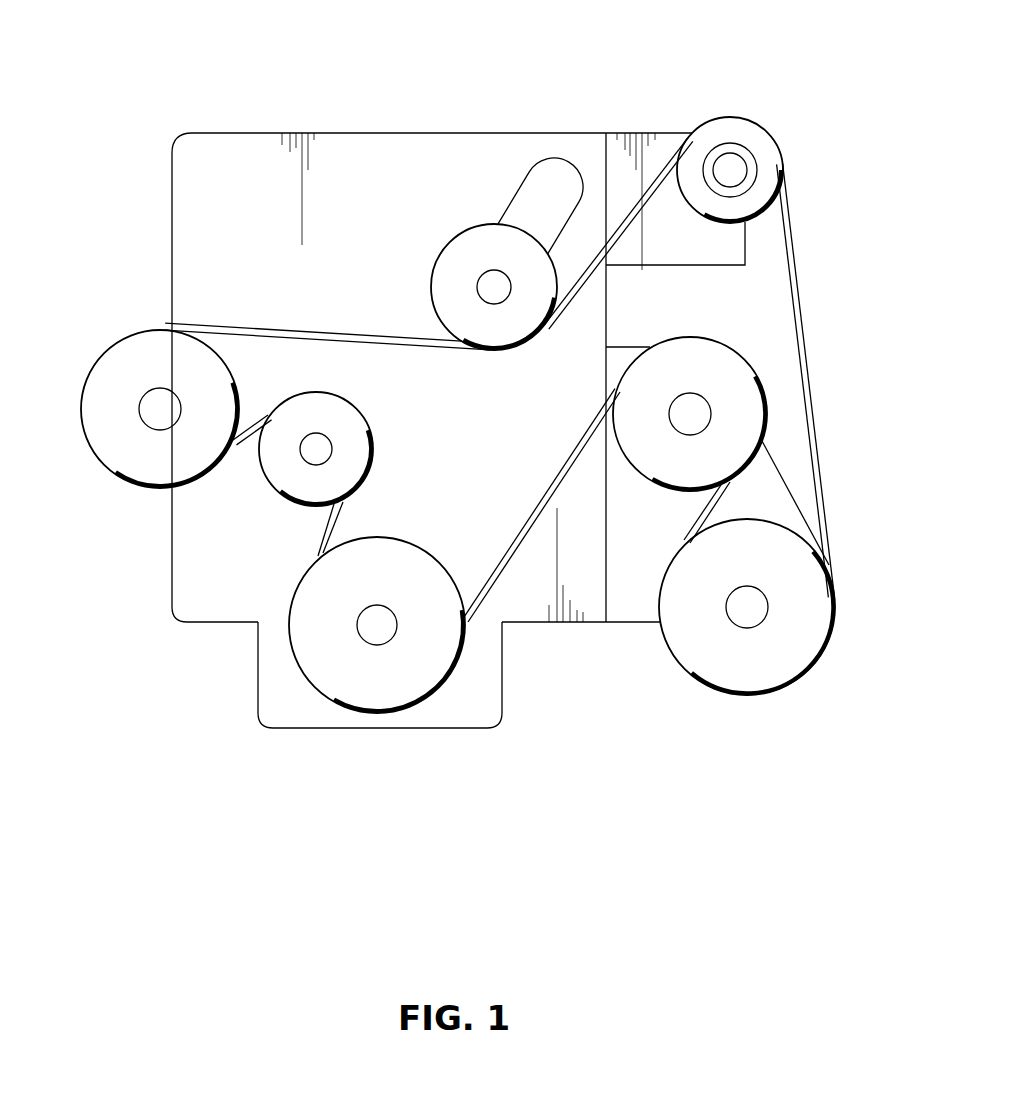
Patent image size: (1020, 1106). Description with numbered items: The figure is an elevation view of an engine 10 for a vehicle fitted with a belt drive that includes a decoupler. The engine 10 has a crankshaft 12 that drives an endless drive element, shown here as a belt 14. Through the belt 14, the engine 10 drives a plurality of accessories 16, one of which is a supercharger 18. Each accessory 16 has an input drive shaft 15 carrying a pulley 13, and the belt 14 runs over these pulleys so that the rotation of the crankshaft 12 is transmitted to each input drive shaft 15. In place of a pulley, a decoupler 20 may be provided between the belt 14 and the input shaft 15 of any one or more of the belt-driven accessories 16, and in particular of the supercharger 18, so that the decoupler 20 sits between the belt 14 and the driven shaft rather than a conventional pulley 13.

The engine 10 is at (134, 125).
The crankshaft 12 is at (376, 630).
The pulley 13 is at (128, 465).
The belt 14 is at (506, 580).
The input drive shaft 15 is at (160, 416).
The accessories 16 is at (142, 365).
The supercharger 18 is at (725, 82).
The decoupler 20 is at (747, 207).